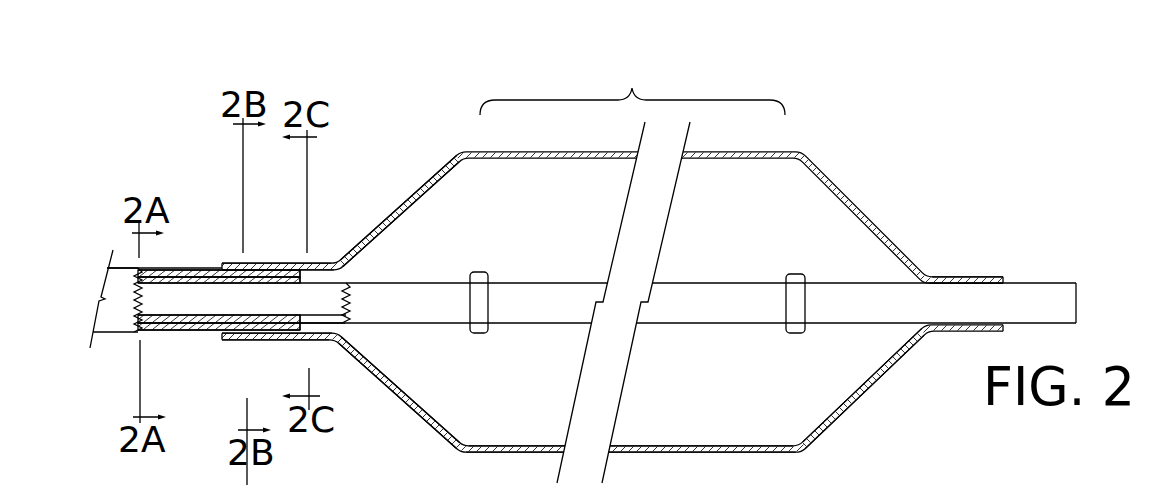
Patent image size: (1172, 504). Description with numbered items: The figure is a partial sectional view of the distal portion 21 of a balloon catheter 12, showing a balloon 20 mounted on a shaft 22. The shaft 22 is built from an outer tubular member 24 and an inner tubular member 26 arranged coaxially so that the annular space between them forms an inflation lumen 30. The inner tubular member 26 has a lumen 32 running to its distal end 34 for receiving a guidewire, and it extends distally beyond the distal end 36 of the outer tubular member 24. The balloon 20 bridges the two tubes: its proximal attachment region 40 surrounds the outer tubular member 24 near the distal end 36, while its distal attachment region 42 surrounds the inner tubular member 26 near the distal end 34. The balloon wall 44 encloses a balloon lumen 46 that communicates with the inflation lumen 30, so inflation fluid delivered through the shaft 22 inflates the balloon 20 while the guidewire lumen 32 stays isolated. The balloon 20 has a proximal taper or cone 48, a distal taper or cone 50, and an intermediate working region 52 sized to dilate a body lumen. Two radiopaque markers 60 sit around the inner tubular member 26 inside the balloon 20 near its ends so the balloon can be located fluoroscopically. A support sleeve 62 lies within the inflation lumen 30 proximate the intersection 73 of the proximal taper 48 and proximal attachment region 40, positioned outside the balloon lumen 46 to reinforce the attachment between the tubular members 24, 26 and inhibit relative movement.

The balloon catheter 12 is at (912, 187).
The balloon 20 is at (784, 136).
The distal portion 21 is at (232, 390).
The shaft 22 is at (97, 340).
The outer tubular member 24 is at (193, 325).
The inner tubular member 26 is at (318, 324).
The inflation lumen 30 is at (137, 268).
The lumen 32 is at (250, 312).
The distal end 34 is at (1050, 282).
The distal end 36 is at (268, 334).
The proximal attachment region 40 is at (272, 264).
The distal attachment region 42 is at (987, 277).
The balloon wall 44 is at (700, 445).
The balloon lumen 46 is at (572, 227).
The proximal taper or cone 48 is at (395, 400).
The distal taper or cone 50 is at (862, 406).
The working region 52 is at (632, 84).
The radiopaque markers 60 is at (480, 270).
The support sleeve 62 is at (202, 272).
The intersection 73 is at (347, 245).